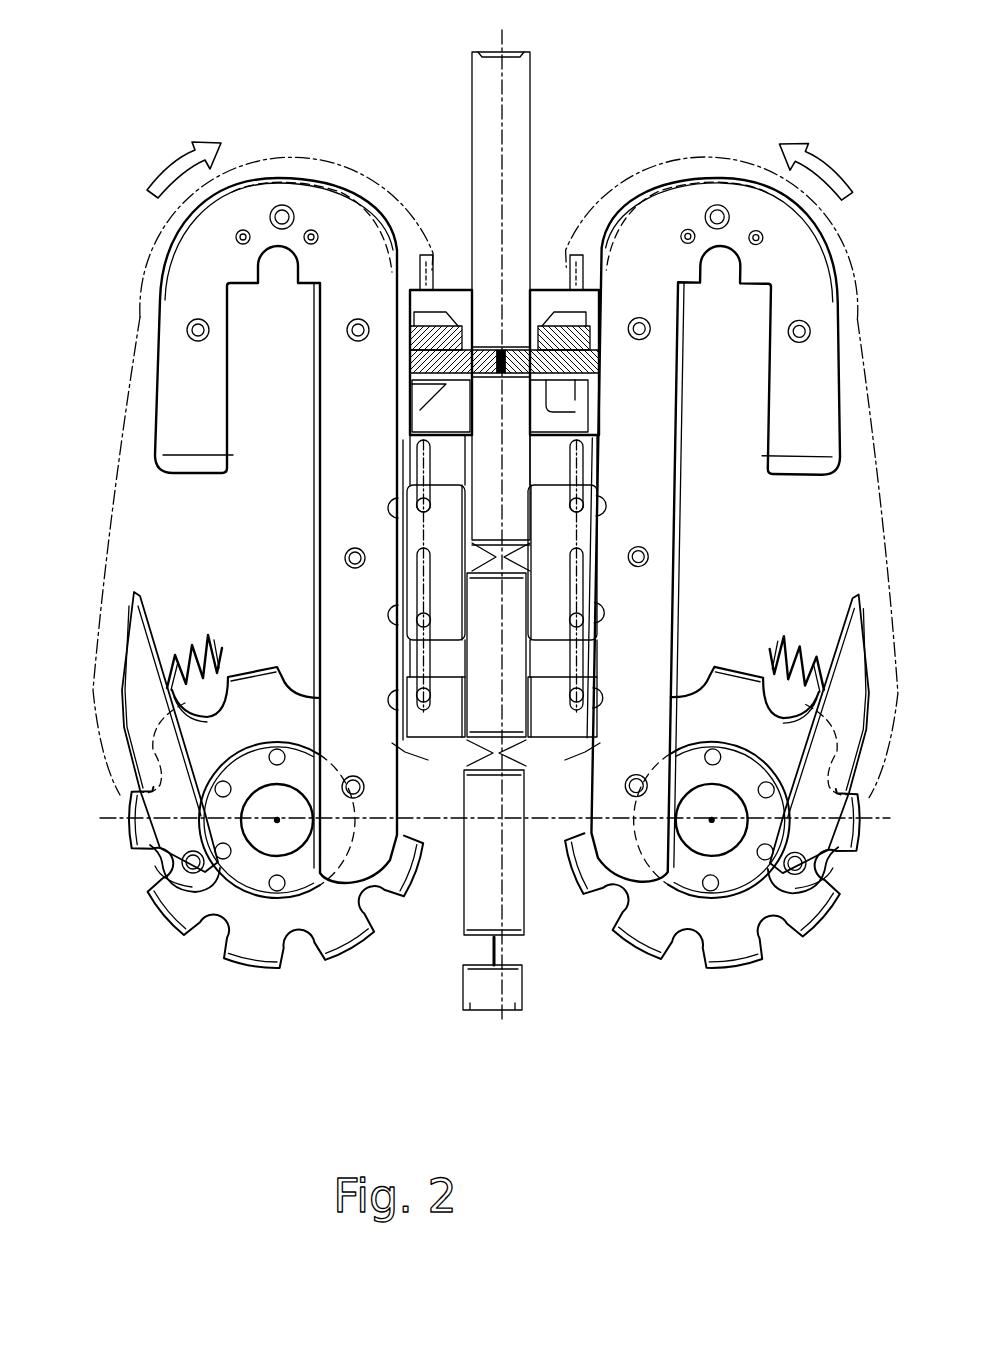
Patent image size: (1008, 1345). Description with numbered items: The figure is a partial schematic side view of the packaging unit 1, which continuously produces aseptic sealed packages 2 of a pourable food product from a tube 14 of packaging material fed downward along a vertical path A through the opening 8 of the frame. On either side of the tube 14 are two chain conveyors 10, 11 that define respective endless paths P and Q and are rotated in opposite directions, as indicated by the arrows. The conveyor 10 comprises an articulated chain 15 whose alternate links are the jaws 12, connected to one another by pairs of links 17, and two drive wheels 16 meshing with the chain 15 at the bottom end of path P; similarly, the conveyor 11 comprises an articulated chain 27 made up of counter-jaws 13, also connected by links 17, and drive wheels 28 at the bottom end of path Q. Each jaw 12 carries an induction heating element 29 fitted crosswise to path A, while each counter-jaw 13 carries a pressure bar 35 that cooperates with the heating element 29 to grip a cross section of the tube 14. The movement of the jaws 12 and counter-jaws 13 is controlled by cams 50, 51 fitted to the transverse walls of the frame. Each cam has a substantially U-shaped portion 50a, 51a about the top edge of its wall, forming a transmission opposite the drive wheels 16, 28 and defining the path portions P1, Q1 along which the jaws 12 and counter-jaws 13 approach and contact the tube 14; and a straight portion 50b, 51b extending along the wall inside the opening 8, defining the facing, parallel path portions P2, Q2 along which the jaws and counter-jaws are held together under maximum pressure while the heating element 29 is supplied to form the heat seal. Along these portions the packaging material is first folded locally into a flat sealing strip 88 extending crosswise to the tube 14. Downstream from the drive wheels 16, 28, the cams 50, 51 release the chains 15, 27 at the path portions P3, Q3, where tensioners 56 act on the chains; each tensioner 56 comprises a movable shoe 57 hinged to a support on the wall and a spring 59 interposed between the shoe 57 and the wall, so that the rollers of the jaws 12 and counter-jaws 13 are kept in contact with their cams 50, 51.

The packaging unit 1 is at (749, 128).
The aseptic sealed packages 2 is at (515, 466).
The opening 8 is at (427, 250).
The chain conveyor 10 is at (302, 978).
The chain conveyor 11 is at (680, 975).
The jaws 12 is at (408, 385).
The counter-jaws 13 is at (600, 395).
The tube 14 is at (522, 196).
The articulated chain 15 is at (400, 538).
The drive wheels 16 is at (240, 952).
The links 17 is at (428, 268).
The articulated chain 27 is at (604, 440).
The drive wheels 28 is at (742, 958).
The induction heating element 29 is at (412, 352).
The pressure bar 35 is at (604, 378).
The cam 50 is at (182, 393).
The U-shaped portion 50a is at (376, 186).
The straight portion 50b is at (203, 510).
The cam 51 is at (301, 200).
The U-shaped portion 51a is at (239, 187).
The straight portion 51b is at (345, 512).
The tensioner 56 is at (121, 714).
The movable shoe 57 is at (131, 656).
The spring 59 is at (172, 668).
The flat sealing strip 88 is at (507, 748).
The endless path P is at (139, 252).
The path portion P1 is at (374, 183).
The path portion P2 is at (420, 590).
The path portion P3 is at (118, 476).
The endless path Q is at (866, 258).
The path portion Q1 is at (622, 183).
The path portion Q2 is at (575, 572).
The path portion Q3 is at (872, 482).
The vertical path A is at (504, 118).